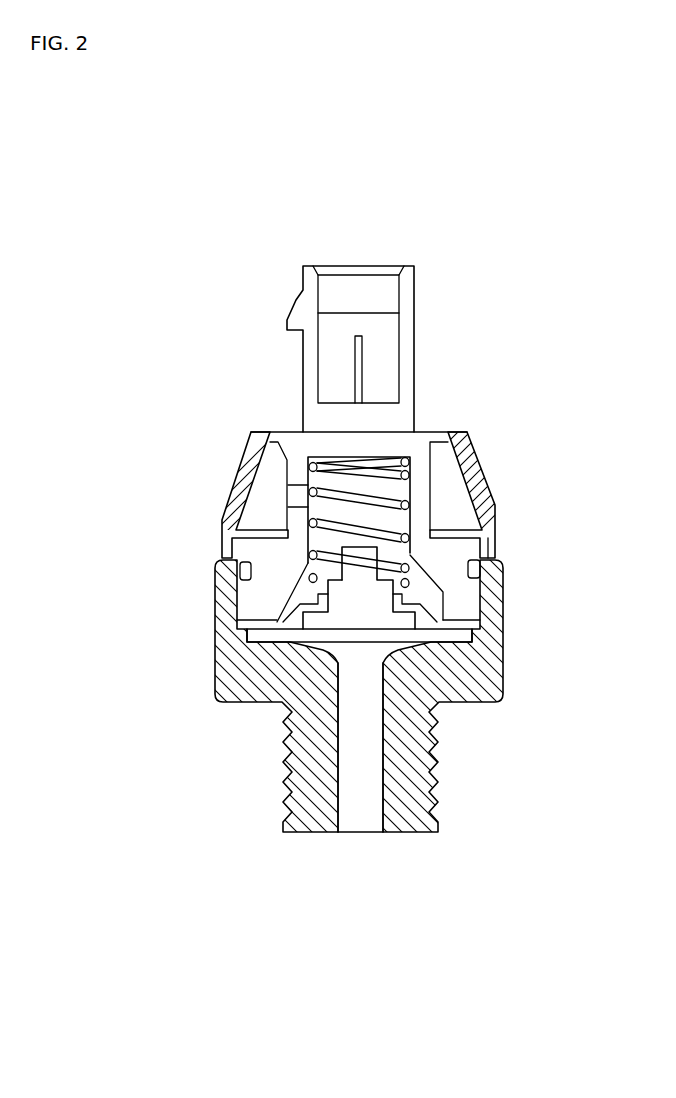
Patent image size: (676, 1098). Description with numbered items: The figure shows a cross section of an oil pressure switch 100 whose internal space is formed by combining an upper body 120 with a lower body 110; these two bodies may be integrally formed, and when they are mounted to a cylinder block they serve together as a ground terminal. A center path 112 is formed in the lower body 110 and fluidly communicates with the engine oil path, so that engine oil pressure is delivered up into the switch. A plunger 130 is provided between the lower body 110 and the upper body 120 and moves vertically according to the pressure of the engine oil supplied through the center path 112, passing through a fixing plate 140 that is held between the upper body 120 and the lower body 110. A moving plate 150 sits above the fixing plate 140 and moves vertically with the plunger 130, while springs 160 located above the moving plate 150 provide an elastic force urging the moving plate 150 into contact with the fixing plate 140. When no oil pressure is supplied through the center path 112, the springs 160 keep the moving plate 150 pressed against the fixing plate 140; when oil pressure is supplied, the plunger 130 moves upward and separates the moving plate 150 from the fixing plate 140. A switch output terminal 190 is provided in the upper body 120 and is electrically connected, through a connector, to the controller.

The oil pressure switch 100 is at (248, 240).
The lower body 110 is at (495, 687).
The center path 112 is at (386, 803).
The upper body 120 is at (453, 547).
The plunger 130 is at (367, 592).
The fixing plate 140 is at (246, 628).
The moving plate 150 is at (300, 583).
The springs 160 is at (410, 500).
The switch output terminal 190 is at (363, 340).